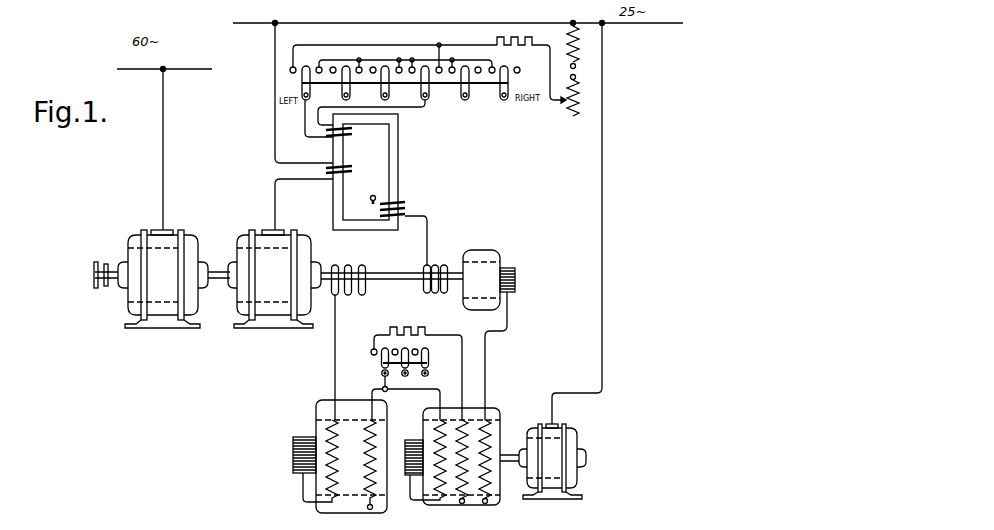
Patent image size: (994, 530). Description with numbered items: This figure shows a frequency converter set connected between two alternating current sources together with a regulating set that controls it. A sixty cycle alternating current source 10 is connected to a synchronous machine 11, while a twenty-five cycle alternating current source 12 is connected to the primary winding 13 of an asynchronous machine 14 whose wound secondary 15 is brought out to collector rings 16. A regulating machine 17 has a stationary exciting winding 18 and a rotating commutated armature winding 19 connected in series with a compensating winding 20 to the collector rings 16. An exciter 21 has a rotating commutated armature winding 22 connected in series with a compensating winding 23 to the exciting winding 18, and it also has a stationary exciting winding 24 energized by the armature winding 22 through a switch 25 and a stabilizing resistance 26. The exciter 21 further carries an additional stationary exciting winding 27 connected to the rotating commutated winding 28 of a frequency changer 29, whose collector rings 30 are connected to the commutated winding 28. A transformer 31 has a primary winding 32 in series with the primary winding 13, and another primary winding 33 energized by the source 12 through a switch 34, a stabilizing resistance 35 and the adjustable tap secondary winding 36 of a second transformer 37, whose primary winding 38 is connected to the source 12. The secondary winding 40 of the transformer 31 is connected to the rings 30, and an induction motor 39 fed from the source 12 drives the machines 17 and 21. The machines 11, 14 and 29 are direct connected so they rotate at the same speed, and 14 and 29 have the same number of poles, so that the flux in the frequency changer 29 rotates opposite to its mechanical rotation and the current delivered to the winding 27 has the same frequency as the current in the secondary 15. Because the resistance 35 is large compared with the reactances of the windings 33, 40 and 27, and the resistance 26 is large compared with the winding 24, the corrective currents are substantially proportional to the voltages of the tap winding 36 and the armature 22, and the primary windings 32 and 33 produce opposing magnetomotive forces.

The 60 cycle alternating current source 10 is at (171, 68).
The synchronous machine 11 is at (170, 234).
The 25 cycle alternating current source 12 is at (461, 23).
The primary winding 13 is at (262, 243).
The asynchronous machine 14 is at (281, 236).
The wound secondary 15 is at (268, 288).
The collector rings 16 is at (362, 264).
The regulating machine 17 is at (351, 400).
The stationary exciting winding 18 is at (378, 435).
The rotating commutated armature winding 19 is at (350, 484).
The compensating winding 20 is at (323, 429).
The exciter 21 is at (490, 408).
The rotating commutated armature winding 22 is at (472, 423).
The compensating winding 23 is at (444, 500).
The stationary exciting winding 24 is at (464, 504).
The switch 25 is at (429, 364).
The stabilizing resistance 26 is at (406, 327).
The additional stationary exciting winding 27 is at (488, 504).
The rotating commutated winding 28 is at (498, 282).
The frequency changer 29 is at (487, 250).
The collector rings 30 is at (442, 293).
The transformer 31 is at (365, 172).
The primary winding 32 is at (351, 172).
The primary winding 33 is at (352, 133).
The switch 34 is at (445, 85).
The stabilizing resistance 35 is at (518, 52).
The adjustable tap secondary winding 36 is at (572, 111).
The transformer 37 is at (571, 27).
The primary winding 38 is at (579, 46).
The induction motor 39 is at (561, 428).
The secondary winding 40 is at (407, 209).